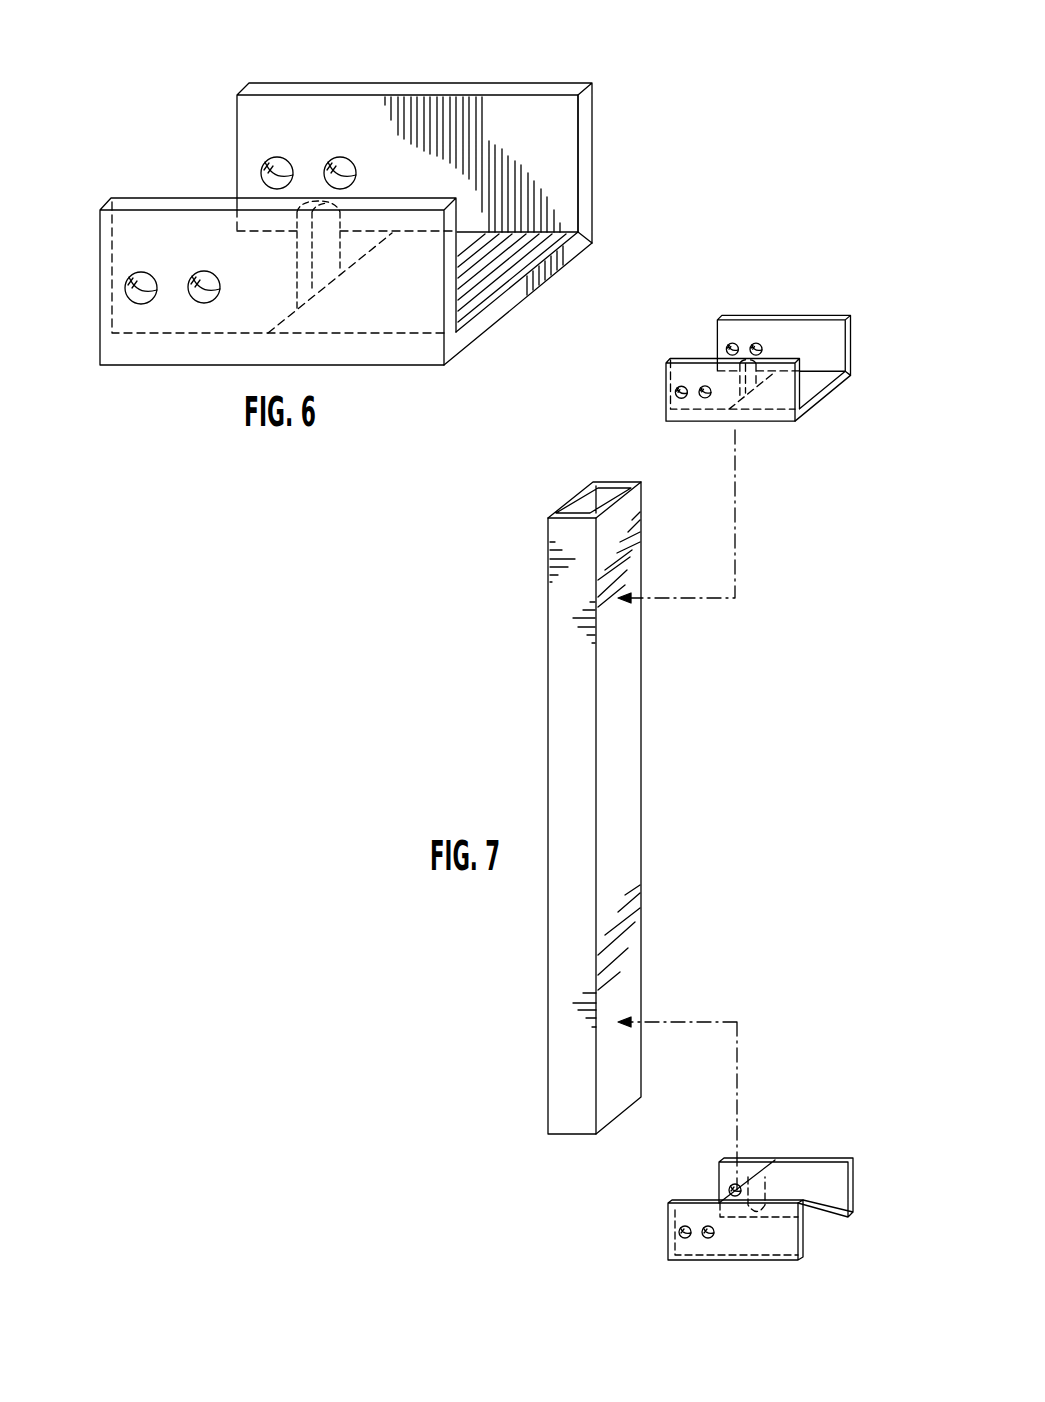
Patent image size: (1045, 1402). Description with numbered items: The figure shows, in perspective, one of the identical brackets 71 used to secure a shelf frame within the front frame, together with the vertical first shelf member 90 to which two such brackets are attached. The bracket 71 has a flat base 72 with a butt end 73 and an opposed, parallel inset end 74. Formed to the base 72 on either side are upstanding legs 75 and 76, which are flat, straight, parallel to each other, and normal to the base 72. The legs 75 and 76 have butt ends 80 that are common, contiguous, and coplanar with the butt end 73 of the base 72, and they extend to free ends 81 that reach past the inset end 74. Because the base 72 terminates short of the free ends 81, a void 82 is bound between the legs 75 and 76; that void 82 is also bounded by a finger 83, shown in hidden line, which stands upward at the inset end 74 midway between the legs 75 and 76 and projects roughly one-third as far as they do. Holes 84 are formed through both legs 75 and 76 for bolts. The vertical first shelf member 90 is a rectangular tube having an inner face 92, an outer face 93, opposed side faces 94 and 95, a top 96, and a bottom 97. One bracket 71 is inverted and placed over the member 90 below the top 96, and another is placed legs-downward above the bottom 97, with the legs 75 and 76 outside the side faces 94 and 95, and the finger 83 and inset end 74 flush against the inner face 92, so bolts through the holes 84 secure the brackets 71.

In FIG. 6, the bracket 71 is at (379, 227).
In FIG. 7, the bracket 71 is at (775, 787).
In FIG. 6, the flat base 72 is at (503, 315).
In FIG. 6, the butt end 73 is at (523, 287).
In FIG. 6, the inset end 74 is at (283, 318).
In FIG. 6, the upstanding leg 75 is at (372, 206).
In FIG. 6, the upstanding leg 76 is at (466, 96).
In FIG. 6, the butt end of leg 80 is at (592, 184).
In FIG. 6, the free end 81 is at (233, 118).
In FIG. 6, the void 82 is at (210, 187).
In FIG. 6, the finger 83 is at (330, 252).
In FIG. 6, the hole 84 is at (340, 157).
In FIG. 7, the hole 84 is at (680, 400).
In FIG. 7, the vertical first shelf member 90 is at (602, 810).
In FIG. 7, the inner face 92 is at (630, 695).
In FIG. 7, the outer face 93 is at (546, 690).
In FIG. 7, the side face 94 is at (568, 705).
In FIG. 7, the side face 95 is at (642, 627).
In FIG. 7, the top 96 is at (630, 502).
In FIG. 7, the bottom 97 is at (628, 1097).